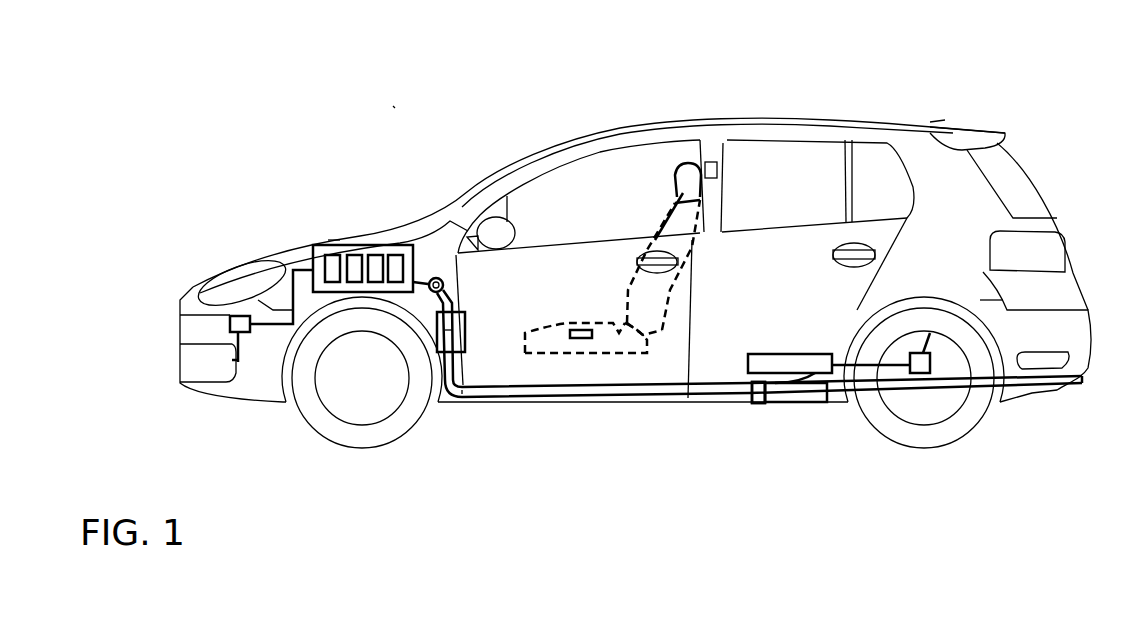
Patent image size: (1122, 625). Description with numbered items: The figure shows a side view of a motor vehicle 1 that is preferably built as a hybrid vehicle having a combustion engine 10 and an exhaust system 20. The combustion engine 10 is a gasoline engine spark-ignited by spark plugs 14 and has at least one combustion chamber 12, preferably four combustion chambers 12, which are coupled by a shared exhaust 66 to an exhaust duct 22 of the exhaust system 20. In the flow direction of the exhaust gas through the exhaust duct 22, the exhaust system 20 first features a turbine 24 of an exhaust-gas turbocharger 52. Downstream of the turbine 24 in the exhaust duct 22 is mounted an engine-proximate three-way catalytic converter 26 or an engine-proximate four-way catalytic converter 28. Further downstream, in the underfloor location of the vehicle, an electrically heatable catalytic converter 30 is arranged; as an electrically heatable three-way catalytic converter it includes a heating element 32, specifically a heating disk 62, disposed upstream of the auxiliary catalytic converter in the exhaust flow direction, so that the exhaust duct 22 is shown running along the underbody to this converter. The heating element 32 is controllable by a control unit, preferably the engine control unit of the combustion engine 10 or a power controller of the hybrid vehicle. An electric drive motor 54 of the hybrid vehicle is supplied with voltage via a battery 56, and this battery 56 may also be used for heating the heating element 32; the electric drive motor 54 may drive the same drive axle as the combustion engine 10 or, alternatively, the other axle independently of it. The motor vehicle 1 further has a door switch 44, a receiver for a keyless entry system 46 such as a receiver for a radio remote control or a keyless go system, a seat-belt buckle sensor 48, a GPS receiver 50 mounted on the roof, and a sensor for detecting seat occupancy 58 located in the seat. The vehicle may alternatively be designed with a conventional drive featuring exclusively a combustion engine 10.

The motor vehicle 1 is at (393, 106).
The combustion engine 10 is at (366, 246).
The combustion chamber 12 is at (332, 268).
The spark plugs 14 is at (335, 228).
The exhaust system 20 is at (497, 427).
The exhaust duct 22 is at (462, 397).
The turbine 24 is at (433, 283).
The three-way catalytic converter 26 is at (459, 316).
The four-way catalytic converter 28 is at (459, 333).
The electrically heatable catalytic converter 30 is at (794, 392).
The heating element 32 is at (753, 392).
The heating disk 62 is at (753, 392).
The door switch 44 is at (710, 167).
The receiver for a keyless entry system 46 is at (228, 323).
The seat-belt buckle sensor 48 is at (615, 315).
The GPS receiver 50 is at (938, 120).
The exhaust-gas turbocharger 52 is at (437, 278).
The electric drive motor 54 is at (918, 366).
The battery 56 is at (805, 363).
The sensor for detecting seat occupancy 58 is at (580, 329).
The shared exhaust 66 is at (413, 282).